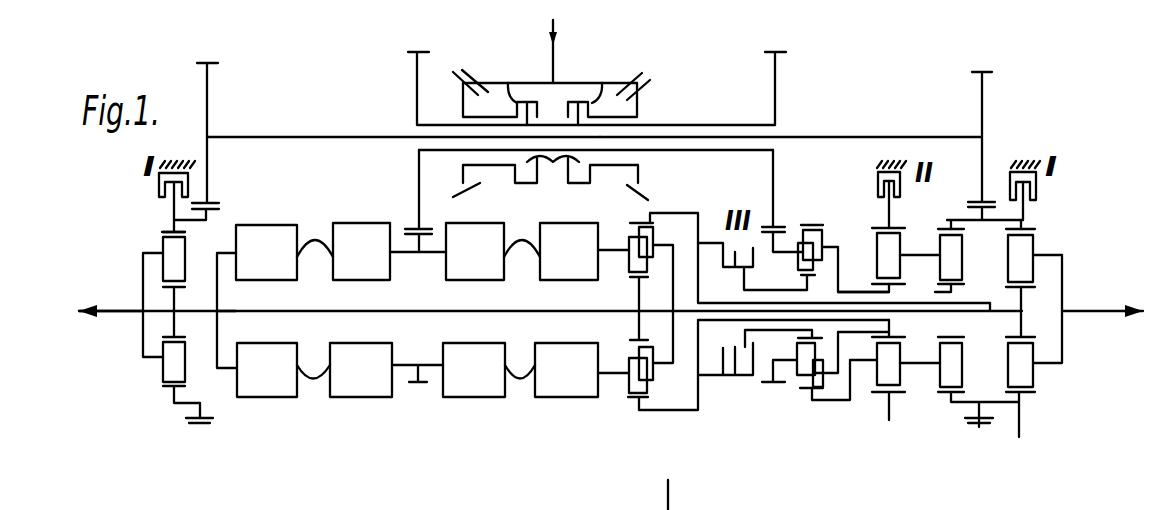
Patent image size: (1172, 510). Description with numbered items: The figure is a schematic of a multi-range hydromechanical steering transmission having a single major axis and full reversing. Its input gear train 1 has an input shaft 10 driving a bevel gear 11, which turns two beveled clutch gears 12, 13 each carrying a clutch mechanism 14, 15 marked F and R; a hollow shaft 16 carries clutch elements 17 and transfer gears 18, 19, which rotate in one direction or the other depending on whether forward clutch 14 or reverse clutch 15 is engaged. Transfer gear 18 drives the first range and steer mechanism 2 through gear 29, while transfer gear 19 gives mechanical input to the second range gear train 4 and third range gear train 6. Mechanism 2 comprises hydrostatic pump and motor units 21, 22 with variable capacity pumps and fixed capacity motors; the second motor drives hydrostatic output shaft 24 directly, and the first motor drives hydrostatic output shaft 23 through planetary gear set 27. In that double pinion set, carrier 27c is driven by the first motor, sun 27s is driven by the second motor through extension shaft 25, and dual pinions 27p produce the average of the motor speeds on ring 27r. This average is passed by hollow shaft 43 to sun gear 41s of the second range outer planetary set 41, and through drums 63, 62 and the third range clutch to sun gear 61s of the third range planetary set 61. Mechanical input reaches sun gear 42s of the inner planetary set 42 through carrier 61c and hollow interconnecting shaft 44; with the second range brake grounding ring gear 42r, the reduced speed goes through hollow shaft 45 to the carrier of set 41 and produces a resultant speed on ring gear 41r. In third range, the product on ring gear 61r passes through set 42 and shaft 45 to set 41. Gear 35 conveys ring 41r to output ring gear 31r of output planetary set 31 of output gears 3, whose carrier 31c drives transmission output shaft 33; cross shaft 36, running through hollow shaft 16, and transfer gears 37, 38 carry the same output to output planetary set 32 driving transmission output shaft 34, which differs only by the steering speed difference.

The input gear train 1 is at (641, 65).
The first range and steer mechanism 2 is at (418, 414).
The output gears 3 is at (132, 352).
The second range gear train 4 is at (934, 334).
The third range gear train 6 is at (817, 334).
The input shaft 10 is at (553, 60).
The bevel gear 11 is at (531, 83).
The beveled clutch gear 12 is at (463, 97).
The beveled clutch gear 13 is at (638, 97).
The forward clutch 14 is at (507, 83).
The reverse clutch 15 is at (603, 83).
The hollow shaft 16 is at (716, 125).
The clutch elements 17 is at (550, 186).
The transfer gear 18 is at (419, 187).
The transfer gear 19 is at (778, 103).
The hydrostatic pump and motor unit 21 is at (598, 407).
The hydrostatic pump and motor unit 22 is at (388, 407).
The hydrostatic output shaft 23 is at (990, 313).
The hydrostatic output shaft 24 is at (198, 309).
The extension shaft 25 is at (418, 313).
The planetary gear set 27 is at (790, 311).
The carrier 27c is at (651, 209).
The dual pinions 27p is at (660, 270).
The ring gear 27r is at (648, 212).
The sun gear 27s is at (637, 328).
The gear 29 is at (433, 253).
The output planetary set 31 is at (1058, 327).
The carrier 31c is at (1062, 257).
The output ring gear 31r is at (1032, 229).
The output planetary set 32 is at (155, 410).
The transmission output shaft 33 is at (1112, 316).
The transmission output shaft 34 is at (112, 309).
The gear 35 is at (982, 221).
The cross shaft 36 is at (868, 140).
The transfer gear 37 is at (983, 104).
The transfer gear 38 is at (210, 104).
The second range outer planetary set 41 is at (959, 310).
The ring gear 41r is at (951, 227).
The sun gear 41s is at (952, 294).
The second range inner planetary set 42 is at (897, 322).
The ring gear 42r is at (893, 227).
The sun gear 42s is at (893, 335).
The hollow shaft 43 is at (917, 303).
The concentric hollow interconnecting shaft 44 is at (853, 272).
The second range interconnecting hollow shaft 45 is at (930, 254).
The third range planetary set 61 is at (825, 312).
The carrier 61c is at (790, 252).
The ring gear 61r is at (806, 224).
The sun gear 61s is at (801, 281).
The drum 62 is at (770, 331).
The drum 63 is at (711, 243).